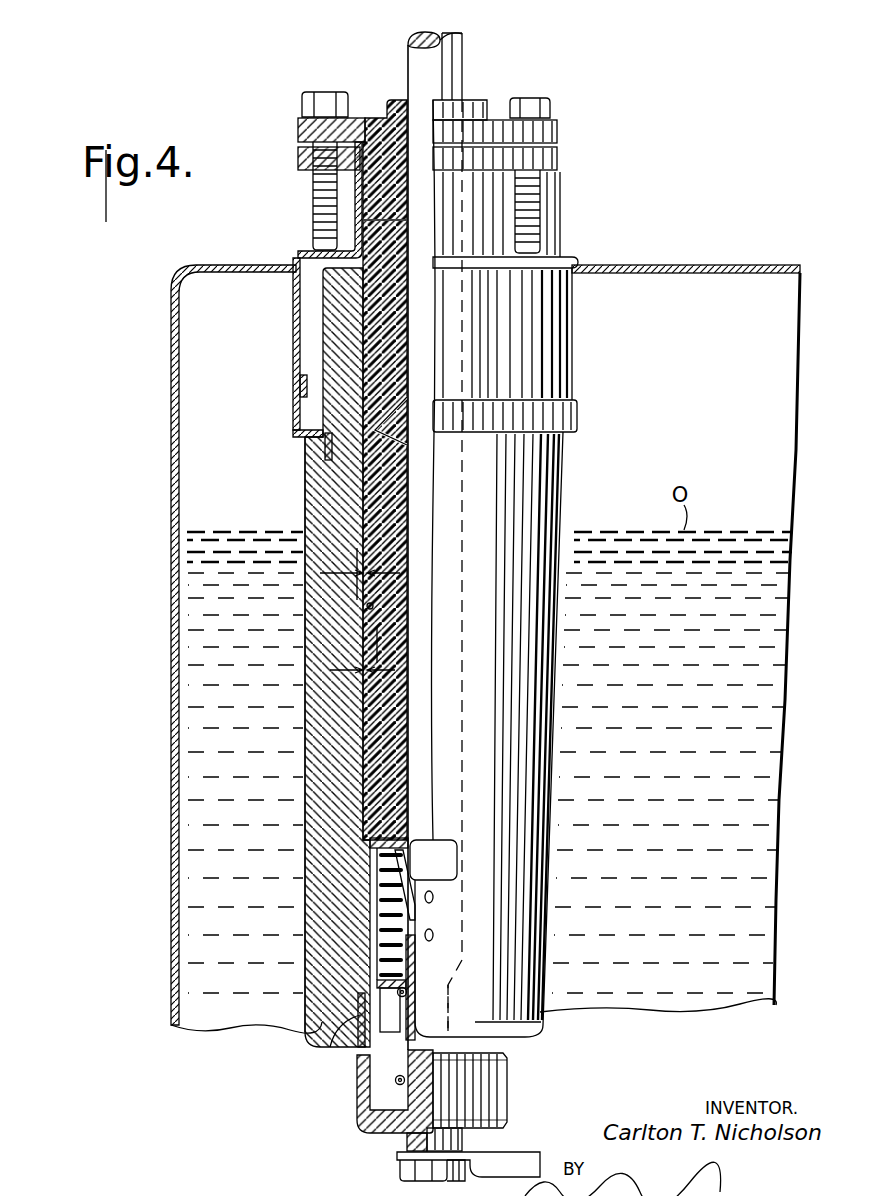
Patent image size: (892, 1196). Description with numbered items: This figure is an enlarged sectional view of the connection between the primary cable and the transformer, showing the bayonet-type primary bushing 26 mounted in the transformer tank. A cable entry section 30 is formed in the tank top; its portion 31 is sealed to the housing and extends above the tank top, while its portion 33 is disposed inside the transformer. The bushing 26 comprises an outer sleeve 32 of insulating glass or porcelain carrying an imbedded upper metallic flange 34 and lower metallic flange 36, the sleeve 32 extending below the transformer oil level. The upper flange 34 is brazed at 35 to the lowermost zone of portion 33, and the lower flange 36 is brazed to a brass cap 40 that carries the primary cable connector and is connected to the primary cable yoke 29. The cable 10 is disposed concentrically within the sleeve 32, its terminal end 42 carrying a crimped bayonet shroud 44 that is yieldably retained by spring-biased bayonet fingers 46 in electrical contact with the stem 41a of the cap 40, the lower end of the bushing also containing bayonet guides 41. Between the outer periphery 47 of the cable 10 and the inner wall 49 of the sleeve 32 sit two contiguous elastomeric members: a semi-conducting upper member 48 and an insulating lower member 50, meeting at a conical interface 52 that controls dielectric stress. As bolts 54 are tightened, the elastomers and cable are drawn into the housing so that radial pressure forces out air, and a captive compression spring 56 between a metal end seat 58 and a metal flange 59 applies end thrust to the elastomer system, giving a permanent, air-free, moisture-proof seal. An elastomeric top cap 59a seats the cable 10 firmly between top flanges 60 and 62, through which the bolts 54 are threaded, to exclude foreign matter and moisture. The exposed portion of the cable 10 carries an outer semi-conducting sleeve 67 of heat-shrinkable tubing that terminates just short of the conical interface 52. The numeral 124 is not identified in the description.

The cable 10 is at (462, 40).
The primary bushing 26 is at (300, 485).
The primary cable yoke 29 is at (398, 1156).
The cable entry section 30 is at (287, 359).
The portion of cable entry section 31 is at (312, 257).
The outer sleeve 32 is at (322, 503).
The portion of cable entry section 33 is at (296, 324).
The upper metallic flange 34 is at (298, 418).
The braze 35 is at (299, 386).
The lower metallic flange 36 is at (337, 1042).
The brass cap 40 is at (356, 1083).
The bayonet guides 41 is at (420, 896).
The stem of cap 41a is at (424, 1083).
The terminal end of cable 42 is at (477, 862).
The bayonet shroud 44 is at (450, 988).
The spring-biased bayonet fingers 46 is at (415, 1020).
The outer periphery of cable 47 is at (404, 523).
The upper elastomeric member 48 is at (400, 316).
The inner wall of sleeve 49 is at (372, 625).
The lower elastomeric member 50 is at (393, 590).
The conical interface 52 is at (405, 432).
The bolts 54 is at (553, 106).
The compression spring 56 is at (385, 946).
The metal end seat 58 is at (371, 839).
The metal flange 59 is at (384, 992).
The top cap 59a is at (403, 100).
The top flange 60 is at (559, 130).
The top flange 62 is at (559, 161).
The outer semi-conducting sleeve 67 is at (420, 331).
The tank 124 is at (196, 265).